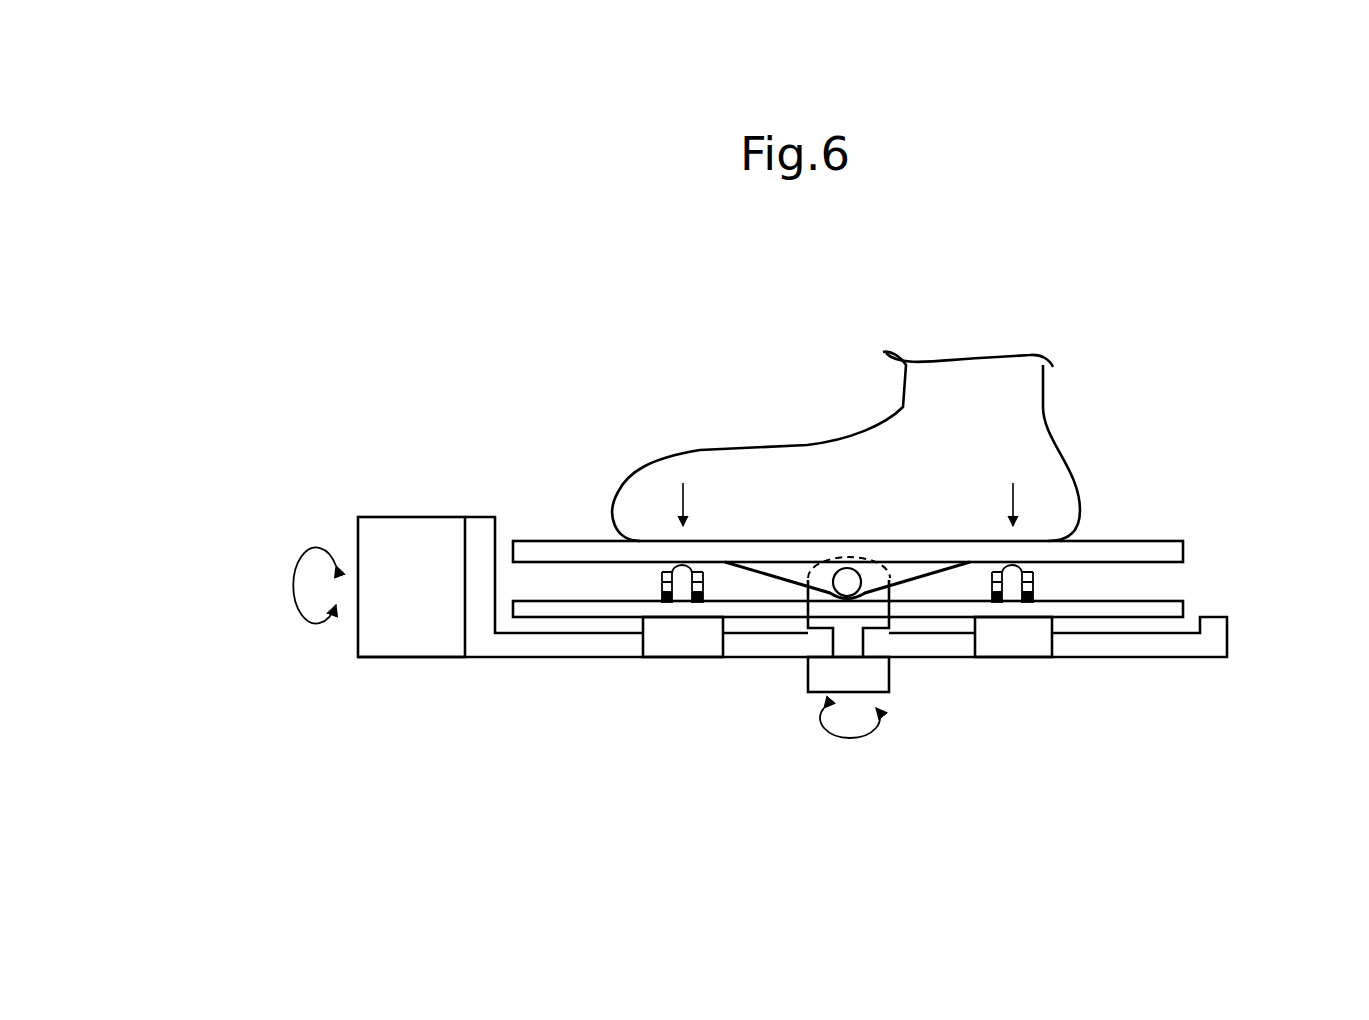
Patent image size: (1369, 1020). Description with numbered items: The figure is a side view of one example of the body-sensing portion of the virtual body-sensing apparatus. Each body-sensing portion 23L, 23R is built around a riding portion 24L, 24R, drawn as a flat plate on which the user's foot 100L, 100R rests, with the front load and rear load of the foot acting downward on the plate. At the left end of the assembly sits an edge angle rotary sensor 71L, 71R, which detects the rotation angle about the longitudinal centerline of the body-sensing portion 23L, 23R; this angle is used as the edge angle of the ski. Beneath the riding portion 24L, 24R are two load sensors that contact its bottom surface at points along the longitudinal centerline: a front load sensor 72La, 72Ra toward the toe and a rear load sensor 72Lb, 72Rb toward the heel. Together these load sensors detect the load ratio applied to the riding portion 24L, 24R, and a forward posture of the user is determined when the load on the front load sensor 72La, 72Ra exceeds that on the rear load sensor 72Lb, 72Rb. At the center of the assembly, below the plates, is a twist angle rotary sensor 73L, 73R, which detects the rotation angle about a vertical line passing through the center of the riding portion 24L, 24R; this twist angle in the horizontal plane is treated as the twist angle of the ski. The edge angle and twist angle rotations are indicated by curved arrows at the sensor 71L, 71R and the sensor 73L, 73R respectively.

The body-sensing portion 23L is at (821, 489).
The body-sensing portion 23R is at (821, 489).
The riding portion 24L is at (929, 506).
The riding portion 24R is at (929, 506).
The edge angle rotary sensor 71L is at (276, 541).
The edge angle rotary sensor 71R is at (367, 535).
The front load sensor 72La is at (555, 692).
The front load sensor 72Ra is at (682, 642).
The rear load sensor 72Lb is at (1136, 687).
The rear load sensor 72Rb is at (1013, 642).
The twist angle rotary sensor 73L is at (948, 697).
The twist angle rotary sensor 73R is at (880, 682).
The foot 100L is at (846, 443).
The foot 100R is at (805, 455).